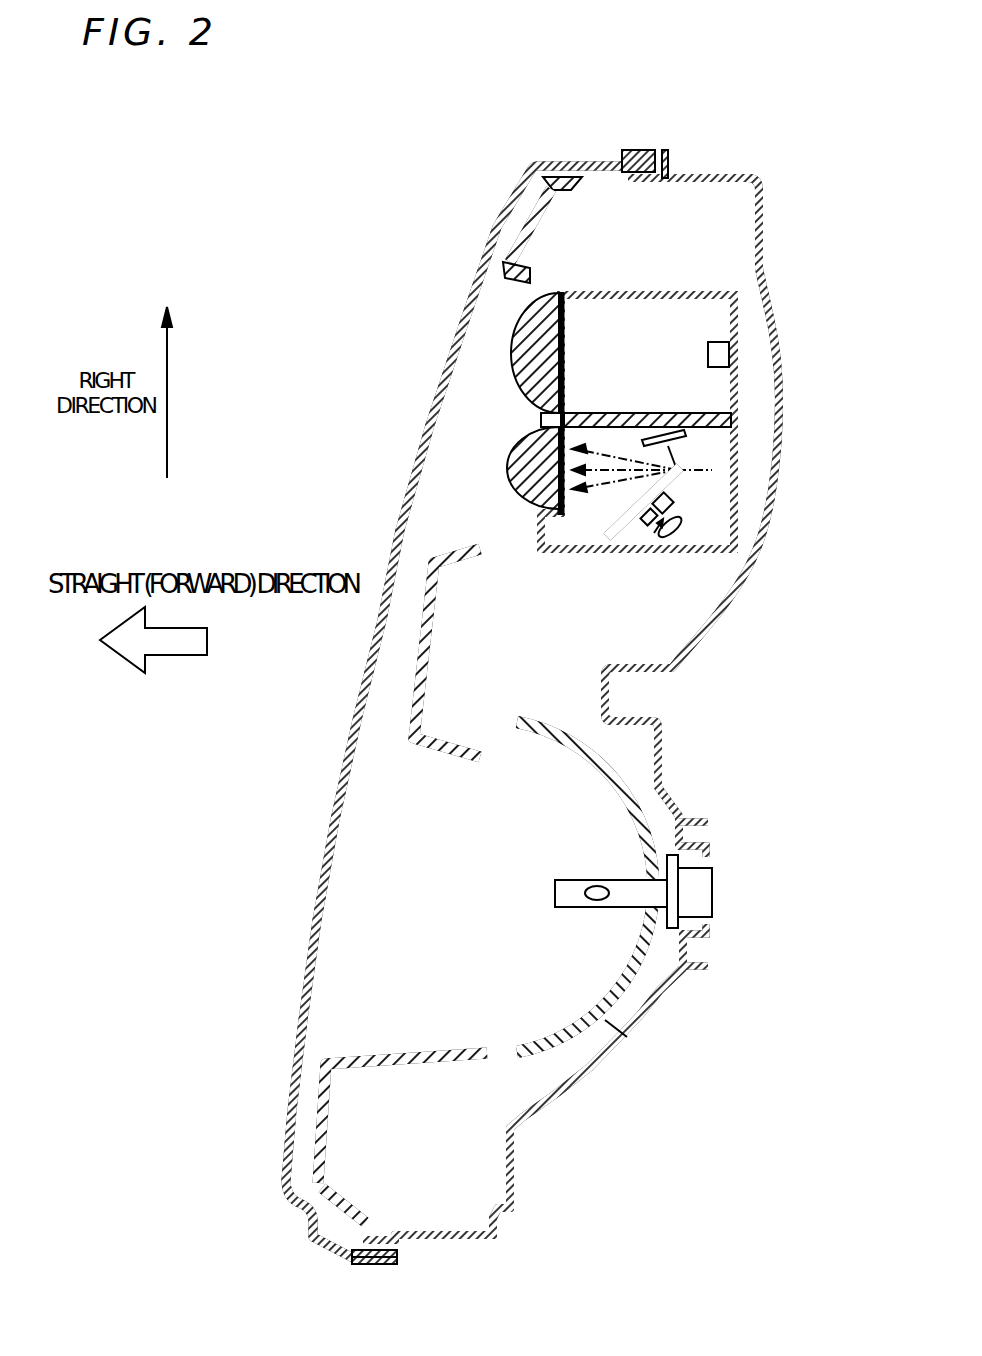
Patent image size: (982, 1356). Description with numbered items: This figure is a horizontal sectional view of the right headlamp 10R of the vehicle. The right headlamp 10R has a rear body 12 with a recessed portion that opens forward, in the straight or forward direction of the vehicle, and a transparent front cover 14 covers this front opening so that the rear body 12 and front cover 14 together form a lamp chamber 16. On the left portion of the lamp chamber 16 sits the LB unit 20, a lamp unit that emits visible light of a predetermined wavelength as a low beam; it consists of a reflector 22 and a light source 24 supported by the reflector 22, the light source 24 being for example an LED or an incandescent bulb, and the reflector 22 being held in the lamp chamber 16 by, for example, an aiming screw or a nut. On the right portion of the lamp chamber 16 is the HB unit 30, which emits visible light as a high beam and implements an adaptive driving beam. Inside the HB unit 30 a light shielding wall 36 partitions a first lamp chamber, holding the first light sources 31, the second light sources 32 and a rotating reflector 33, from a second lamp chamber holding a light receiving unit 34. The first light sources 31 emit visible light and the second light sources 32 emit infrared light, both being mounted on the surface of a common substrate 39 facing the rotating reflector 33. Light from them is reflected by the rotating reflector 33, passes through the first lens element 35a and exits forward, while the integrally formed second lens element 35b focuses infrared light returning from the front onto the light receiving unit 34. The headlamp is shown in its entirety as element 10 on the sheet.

The right headlamp 10R is at (705, 141).
The vehicle lamp 10 is at (553, 1300).
The rear body 12 is at (565, 1091).
The front cover 14 is at (290, 1136).
The lamp chamber 16 is at (492, 1177).
The LB unit 20 is at (644, 981).
The reflector 22 is at (629, 1037).
The light source 24 is at (555, 893).
The HB unit 30 is at (742, 333).
The first light sources 31 is at (700, 460).
The second light sources 32 is at (642, 468).
The rotating reflector 33 is at (630, 546).
The light receiving unit 34 is at (722, 352).
The first lens element 35a is at (507, 468).
The second lens element 35b is at (512, 353).
The light shielding wall 36 is at (718, 412).
The common substrate 39 is at (690, 440).